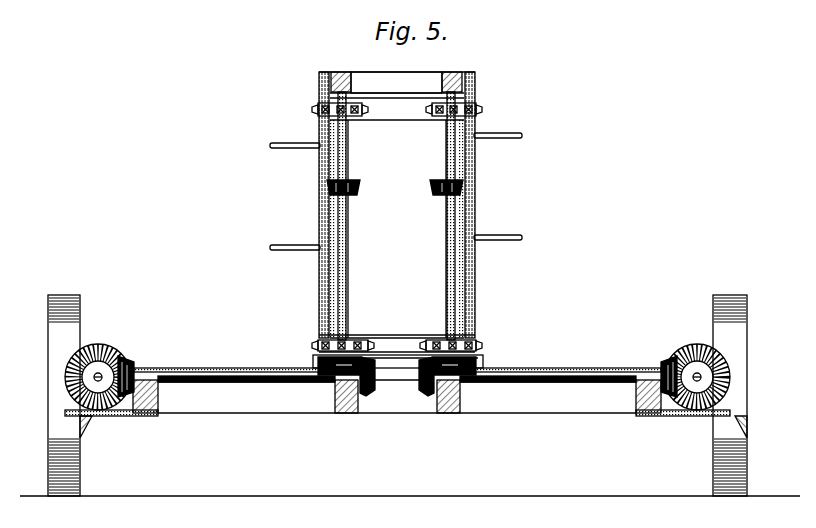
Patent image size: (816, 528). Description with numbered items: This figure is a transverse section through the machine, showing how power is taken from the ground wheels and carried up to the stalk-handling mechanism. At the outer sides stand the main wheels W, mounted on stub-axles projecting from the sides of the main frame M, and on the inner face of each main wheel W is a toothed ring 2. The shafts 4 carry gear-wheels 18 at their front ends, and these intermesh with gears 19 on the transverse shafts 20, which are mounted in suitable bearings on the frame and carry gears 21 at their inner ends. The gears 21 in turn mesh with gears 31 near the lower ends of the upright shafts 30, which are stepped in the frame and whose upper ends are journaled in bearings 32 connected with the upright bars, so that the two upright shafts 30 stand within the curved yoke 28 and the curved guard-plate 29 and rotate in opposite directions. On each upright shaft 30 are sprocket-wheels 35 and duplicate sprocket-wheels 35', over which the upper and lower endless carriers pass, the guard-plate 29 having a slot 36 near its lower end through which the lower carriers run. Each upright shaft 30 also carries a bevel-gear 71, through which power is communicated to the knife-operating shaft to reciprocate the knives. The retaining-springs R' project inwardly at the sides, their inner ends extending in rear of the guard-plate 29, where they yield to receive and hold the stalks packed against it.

The main wheel W is at (80, 298).
The gear-wheel 18 is at (112, 352).
The shaft 4 is at (96, 376).
The gear 19 is at (136, 363).
The toothed ring 2 is at (88, 428).
The main frame M is at (206, 404).
The transverse shaft 20 is at (268, 381).
The gear 31 is at (482, 359).
The gear 21 is at (418, 391).
The curved guard-plate 29 is at (397, 212).
The curved yoke 28 is at (396, 82).
The bearing 32 is at (341, 76).
The upright shaft 30 is at (347, 268).
The sprocket-wheel 35 is at (395, 105).
The sprocket-wheel 35' is at (394, 333).
The bevel-gear 71 is at (356, 183).
The retaining-spring R' is at (396, 191).
The slot 36 is at (390, 340).